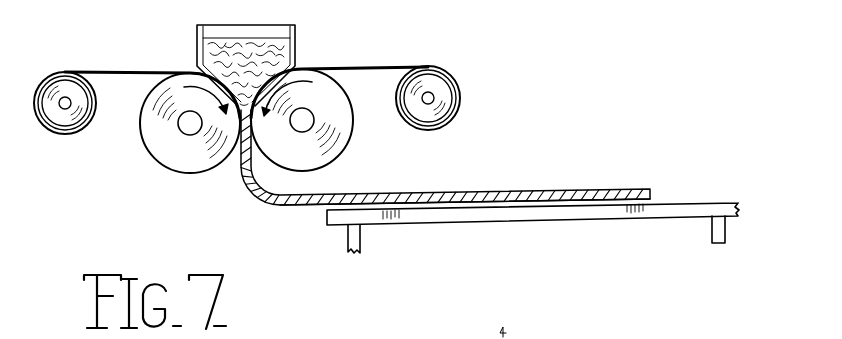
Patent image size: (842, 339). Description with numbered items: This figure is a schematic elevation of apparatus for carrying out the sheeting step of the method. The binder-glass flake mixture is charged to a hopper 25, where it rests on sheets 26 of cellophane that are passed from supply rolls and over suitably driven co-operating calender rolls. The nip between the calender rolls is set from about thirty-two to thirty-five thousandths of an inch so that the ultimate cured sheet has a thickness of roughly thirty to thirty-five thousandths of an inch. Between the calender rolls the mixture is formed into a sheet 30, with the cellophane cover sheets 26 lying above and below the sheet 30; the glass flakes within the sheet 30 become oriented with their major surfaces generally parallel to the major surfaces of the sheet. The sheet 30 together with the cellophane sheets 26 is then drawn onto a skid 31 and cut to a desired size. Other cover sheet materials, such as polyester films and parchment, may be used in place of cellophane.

The hopper 25 is at (296, 44).
The sheets of cellophane 26 is at (127, 72).
The sheet 30 is at (310, 203).
The skid 31 is at (481, 221).